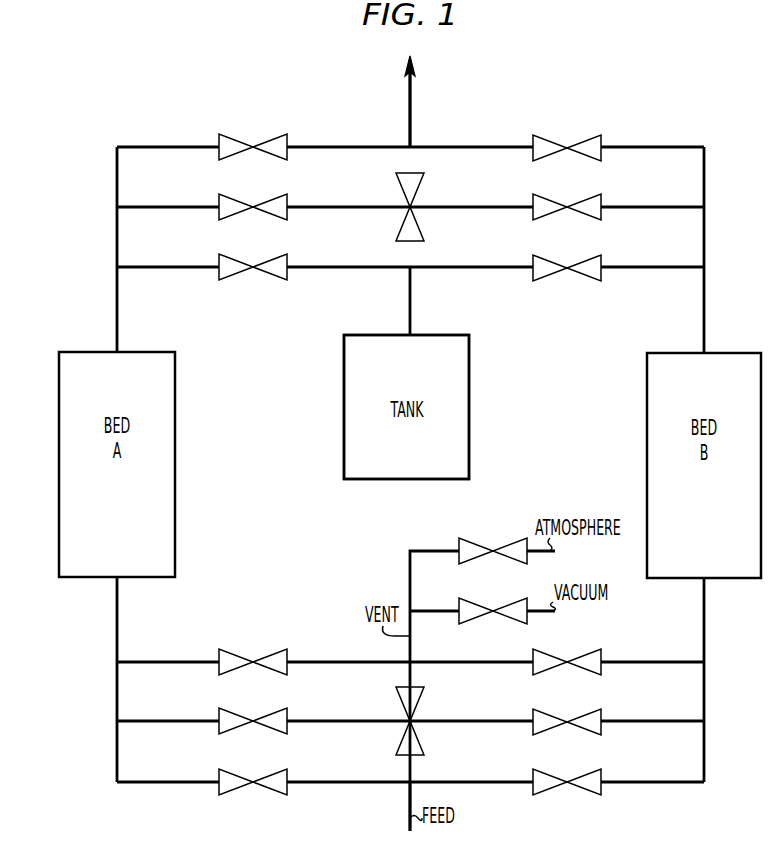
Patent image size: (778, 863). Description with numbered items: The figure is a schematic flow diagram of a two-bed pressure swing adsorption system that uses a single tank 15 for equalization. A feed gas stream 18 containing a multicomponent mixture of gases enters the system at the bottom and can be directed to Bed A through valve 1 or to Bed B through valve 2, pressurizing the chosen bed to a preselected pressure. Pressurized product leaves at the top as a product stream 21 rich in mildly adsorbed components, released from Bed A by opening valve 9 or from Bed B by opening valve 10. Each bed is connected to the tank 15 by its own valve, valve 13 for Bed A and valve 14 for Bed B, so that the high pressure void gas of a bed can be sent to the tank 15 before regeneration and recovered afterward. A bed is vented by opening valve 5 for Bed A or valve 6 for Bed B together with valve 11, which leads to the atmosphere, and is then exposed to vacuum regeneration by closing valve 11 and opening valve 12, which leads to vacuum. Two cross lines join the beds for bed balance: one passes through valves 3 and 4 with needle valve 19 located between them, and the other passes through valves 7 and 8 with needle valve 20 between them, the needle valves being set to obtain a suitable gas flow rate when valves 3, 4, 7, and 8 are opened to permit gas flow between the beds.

The valve 1 is at (253, 780).
The valve 2 is at (567, 780).
The valve 3 is at (253, 719).
The valve 4 is at (567, 720).
The valve 5 is at (253, 660).
The valve 6 is at (567, 660).
The valve 7 is at (253, 205).
The valve 8 is at (567, 205).
The valve 9 is at (253, 145).
The valve 10 is at (567, 146).
The valve 11 is at (493, 549).
The valve 12 is at (493, 609).
The valve 13 is at (253, 265).
The valve 14 is at (567, 266).
The tank 15 is at (469, 427).
The feed gas stream 18 is at (410, 806).
The needle valve 19 is at (395, 697).
The needle valve 20 is at (401, 185).
The product stream 21 is at (410, 90).